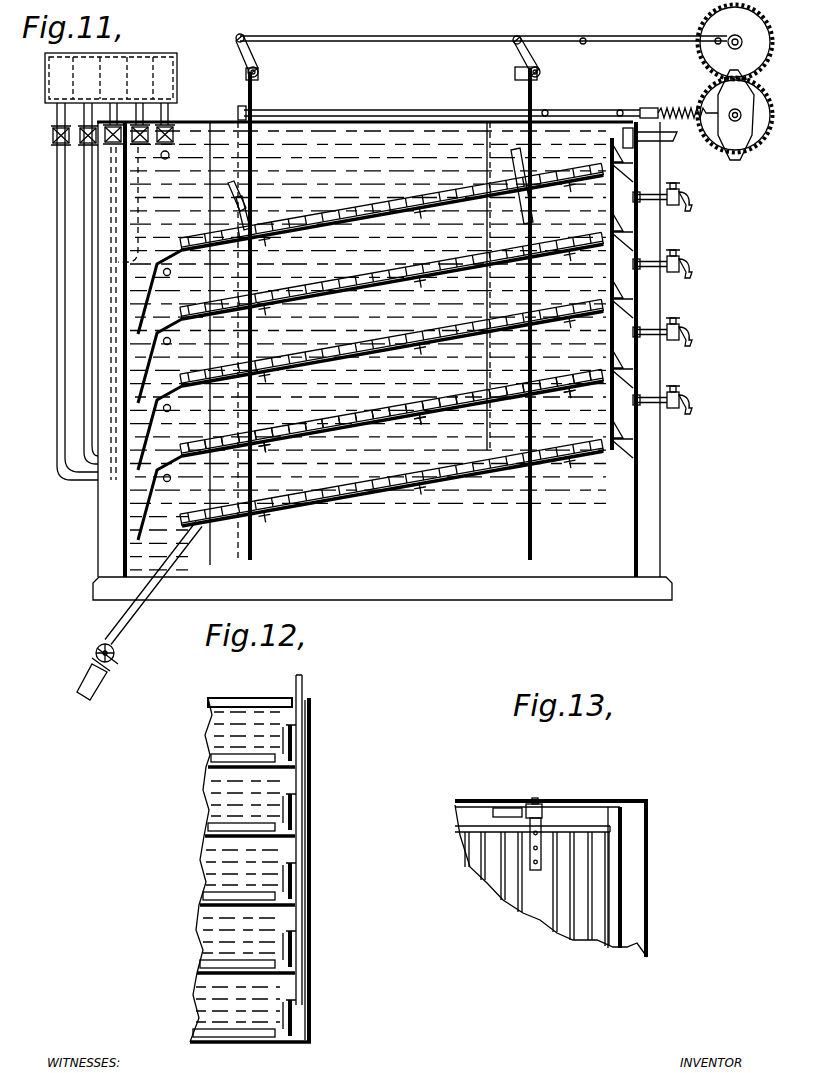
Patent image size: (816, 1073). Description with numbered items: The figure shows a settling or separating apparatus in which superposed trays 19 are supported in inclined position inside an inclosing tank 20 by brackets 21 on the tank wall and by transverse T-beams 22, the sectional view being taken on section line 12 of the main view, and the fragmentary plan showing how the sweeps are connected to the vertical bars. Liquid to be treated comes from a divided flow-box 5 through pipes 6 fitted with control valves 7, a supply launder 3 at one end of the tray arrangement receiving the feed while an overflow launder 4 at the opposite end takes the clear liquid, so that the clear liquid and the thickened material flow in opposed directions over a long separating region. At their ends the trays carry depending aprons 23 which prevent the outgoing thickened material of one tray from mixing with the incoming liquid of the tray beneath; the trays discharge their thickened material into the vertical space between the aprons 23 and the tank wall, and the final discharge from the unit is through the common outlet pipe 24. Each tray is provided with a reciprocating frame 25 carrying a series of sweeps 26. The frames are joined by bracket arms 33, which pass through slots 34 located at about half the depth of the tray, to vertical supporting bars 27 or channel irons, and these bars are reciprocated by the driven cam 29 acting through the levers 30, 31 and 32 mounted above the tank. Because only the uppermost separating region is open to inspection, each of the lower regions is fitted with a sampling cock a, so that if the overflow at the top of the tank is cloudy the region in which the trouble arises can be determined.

In FIG. 11, the supply launder 3 is at (642, 110).
In FIG. 11, the overflow launder 4 is at (166, 277).
In FIG. 11, the divided flow-box 5 is at (115, 60).
In FIG. 11, the pipes 6 is at (62, 237).
In FIG. 11, the control valves 7 is at (62, 143).
In FIG. 11, the section line 12 is at (229, 122).
In FIG. 11, the superposed trays 19 is at (334, 232).
In FIG. 11, the tank 20 is at (540, 460).
In FIG. 13, the tank 20 is at (650, 840).
In FIG. 11, the brackets 21 is at (648, 290).
In FIG. 11, the transverse T-beams 22 is at (425, 416).
In FIG. 11, the depending aprons 23 is at (140, 360).
In FIG. 11, the common outlet pipe 24 is at (100, 680).
In FIG. 11, the reciprocating frame 25 is at (370, 410).
In FIG. 12, the reciprocating frame 25 is at (218, 830).
In FIG. 13, the reciprocating frame 25 is at (612, 879).
In FIG. 11, the sweeps 26 is at (430, 400).
In FIG. 12, the sweeps 26 is at (213, 905).
In FIG. 13, the sweeps 26 is at (552, 898).
In FIG. 11, the vertical supporting bars 27 is at (253, 104).
In FIG. 12, the vertical supporting bars 27 is at (300, 757).
In FIG. 13, the vertical supporting bars 27 is at (536, 804).
In FIG. 11, the driven cam 29 is at (735, 83).
In FIG. 11, the lever 30 is at (585, 111).
In FIG. 11, the lever 31 is at (533, 57).
In FIG. 11, the lever 32 is at (382, 36).
In FIG. 11, the bracket arms 33 is at (250, 207).
In FIG. 12, the bracket arms 33 is at (288, 808).
In FIG. 13, the bracket arms 33 is at (546, 830).
In FIG. 11, the slots 34 is at (238, 185).
In FIG. 12, the slots 34 is at (298, 787).
In FIG. 11, the sampling cock a is at (688, 197).